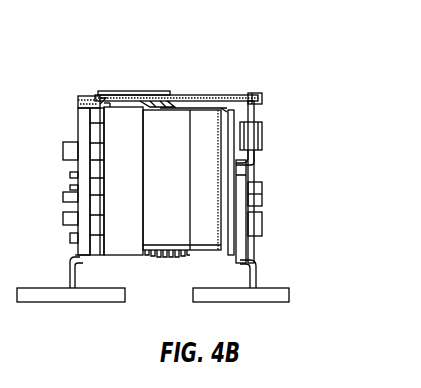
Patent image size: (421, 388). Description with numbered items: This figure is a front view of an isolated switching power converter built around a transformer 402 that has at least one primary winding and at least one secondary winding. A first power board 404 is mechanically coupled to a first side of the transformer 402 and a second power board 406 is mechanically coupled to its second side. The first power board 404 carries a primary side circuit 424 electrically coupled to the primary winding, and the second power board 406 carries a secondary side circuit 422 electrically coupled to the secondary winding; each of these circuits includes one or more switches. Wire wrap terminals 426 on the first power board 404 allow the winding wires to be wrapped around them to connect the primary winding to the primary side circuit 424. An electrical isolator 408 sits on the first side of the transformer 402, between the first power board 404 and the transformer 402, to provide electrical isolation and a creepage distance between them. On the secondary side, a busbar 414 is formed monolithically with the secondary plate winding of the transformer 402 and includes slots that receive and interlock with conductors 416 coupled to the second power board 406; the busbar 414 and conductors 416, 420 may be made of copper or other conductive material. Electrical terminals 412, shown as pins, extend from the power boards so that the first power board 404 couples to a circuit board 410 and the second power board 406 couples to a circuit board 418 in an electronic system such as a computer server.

The transformer 402 is at (173, 133).
The first power board 404 is at (80, 132).
The second power board 406 is at (242, 175).
The electrical isolator 408 is at (128, 118).
The circuit board 410 is at (50, 296).
The electrical terminals 412 is at (70, 270).
The busbar 414 is at (232, 96).
The conductors 416 is at (254, 115).
The circuit board 418 is at (283, 295).
The conductors 420 is at (117, 91).
The secondary side circuit 422 is at (252, 186).
The primary side circuit 424 is at (72, 178).
The wire wrap terminals 426 is at (85, 96).